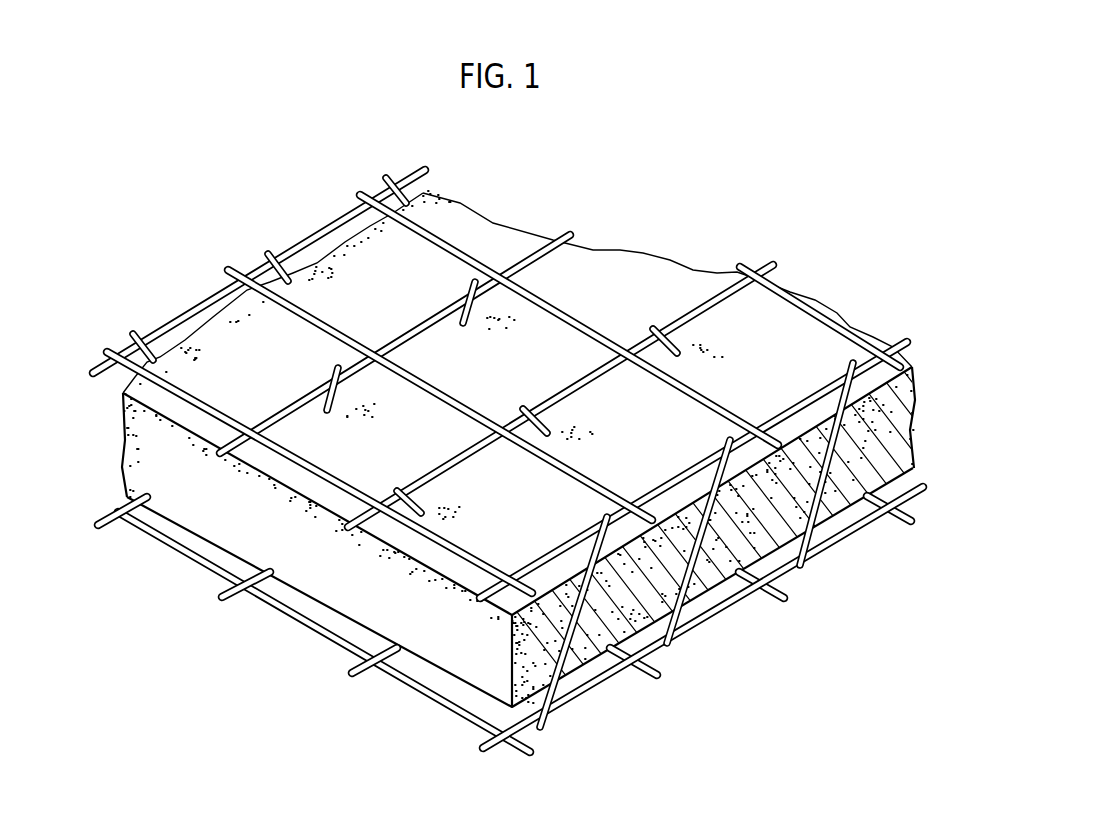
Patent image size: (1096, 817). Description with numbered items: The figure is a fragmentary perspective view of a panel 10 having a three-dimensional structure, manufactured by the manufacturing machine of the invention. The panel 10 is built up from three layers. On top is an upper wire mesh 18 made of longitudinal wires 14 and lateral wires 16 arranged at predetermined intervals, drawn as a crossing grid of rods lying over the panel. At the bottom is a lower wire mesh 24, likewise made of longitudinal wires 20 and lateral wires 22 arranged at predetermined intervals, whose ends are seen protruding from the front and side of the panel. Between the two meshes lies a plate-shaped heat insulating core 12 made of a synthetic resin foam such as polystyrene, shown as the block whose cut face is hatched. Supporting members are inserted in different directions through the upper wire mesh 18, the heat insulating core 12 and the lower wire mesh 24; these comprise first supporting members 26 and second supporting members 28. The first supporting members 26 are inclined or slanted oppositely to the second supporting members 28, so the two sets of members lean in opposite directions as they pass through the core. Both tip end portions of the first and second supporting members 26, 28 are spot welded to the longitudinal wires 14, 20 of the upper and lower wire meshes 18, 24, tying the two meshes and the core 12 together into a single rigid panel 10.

The panel 10 is at (587, 460).
The heat insulating core 12 is at (640, 266).
The longitudinal wires 14 is at (903, 338).
The lateral wires 16 is at (825, 320).
The upper wire mesh 18 is at (498, 431).
The longitudinal wires 20 is at (490, 752).
The lateral wires 22 is at (917, 533).
The lower wire mesh 24 is at (517, 635).
The first supporting members 26 is at (849, 365).
The second supporting members 28 is at (655, 329).